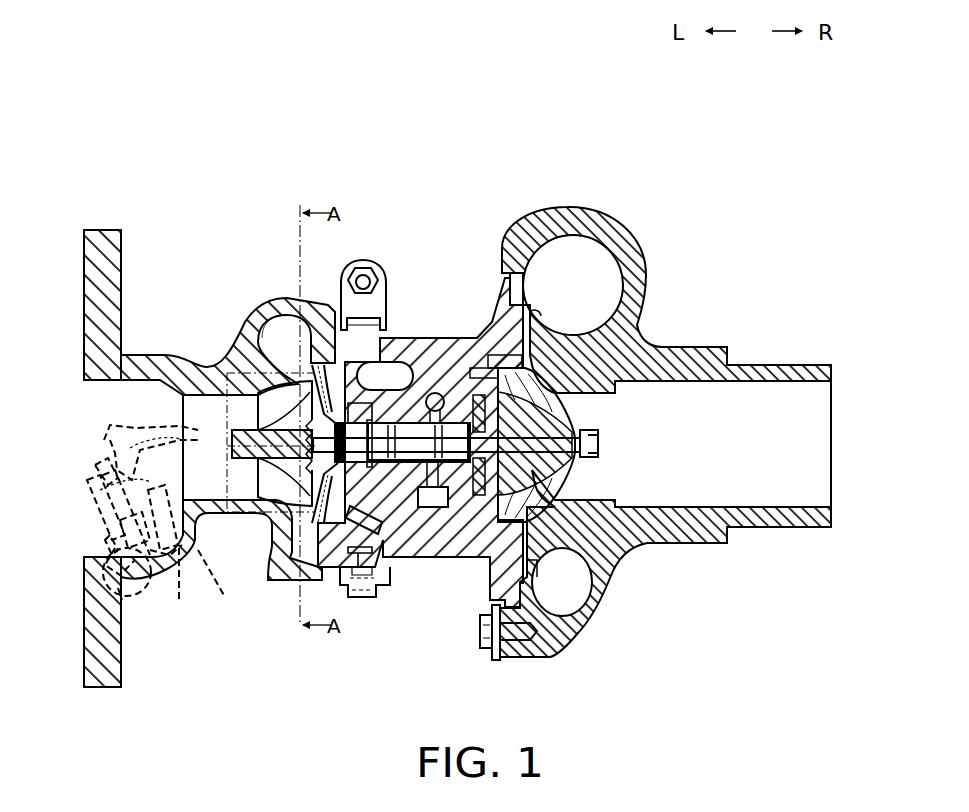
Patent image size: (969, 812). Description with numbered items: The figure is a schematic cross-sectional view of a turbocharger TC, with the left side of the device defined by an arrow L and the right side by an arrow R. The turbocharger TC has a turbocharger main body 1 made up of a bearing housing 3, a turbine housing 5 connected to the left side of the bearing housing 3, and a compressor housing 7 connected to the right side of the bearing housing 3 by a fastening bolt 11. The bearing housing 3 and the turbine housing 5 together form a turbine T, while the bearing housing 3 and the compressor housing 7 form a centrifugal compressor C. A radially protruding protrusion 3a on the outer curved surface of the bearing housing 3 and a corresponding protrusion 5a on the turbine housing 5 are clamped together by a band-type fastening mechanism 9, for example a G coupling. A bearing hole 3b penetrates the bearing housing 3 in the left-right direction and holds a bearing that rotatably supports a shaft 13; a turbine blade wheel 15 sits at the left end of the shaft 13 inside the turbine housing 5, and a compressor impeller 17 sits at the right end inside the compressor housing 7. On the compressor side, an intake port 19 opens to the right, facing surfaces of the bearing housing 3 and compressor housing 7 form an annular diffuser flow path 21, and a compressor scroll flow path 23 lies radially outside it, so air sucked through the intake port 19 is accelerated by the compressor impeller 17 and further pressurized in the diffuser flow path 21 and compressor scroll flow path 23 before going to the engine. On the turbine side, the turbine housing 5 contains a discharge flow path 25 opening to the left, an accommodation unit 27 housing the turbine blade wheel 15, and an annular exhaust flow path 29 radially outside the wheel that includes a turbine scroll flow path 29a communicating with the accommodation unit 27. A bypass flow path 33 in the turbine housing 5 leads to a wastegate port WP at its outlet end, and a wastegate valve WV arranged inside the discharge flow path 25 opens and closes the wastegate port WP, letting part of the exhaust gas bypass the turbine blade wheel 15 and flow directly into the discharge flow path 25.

The turbocharger main body 1 is at (198, 101).
The turbocharger TC is at (141, 50).
The turbine T is at (248, 183).
The centrifugal compressor C is at (520, 175).
The bearing housing 3 is at (432, 343).
The protrusion 3a is at (386, 316).
The bearing hole 3b is at (355, 467).
The turbine housing 5 is at (150, 354).
The protrusion 5a is at (332, 312).
The compressor housing 7 is at (583, 207).
The fastening mechanism 9 is at (363, 243).
The fastening bolt 11 is at (487, 660).
The shaft 13 is at (400, 456).
The turbine blade wheel 15 is at (183, 408).
The compressor impeller 17 is at (572, 473).
The intake port 19 is at (833, 484).
The diffuser flow path 21 is at (515, 334).
The compressor scroll flow path 23 is at (590, 249).
The discharge flow path 25 is at (132, 380).
The accommodation unit 27 is at (225, 392).
The exhaust flow path 29 is at (282, 316).
The turbine scroll flow path 29a is at (262, 316).
The bypass flow path 33 is at (112, 448).
The wastegate port WP is at (82, 490).
The wastegate valve WV is at (97, 542).